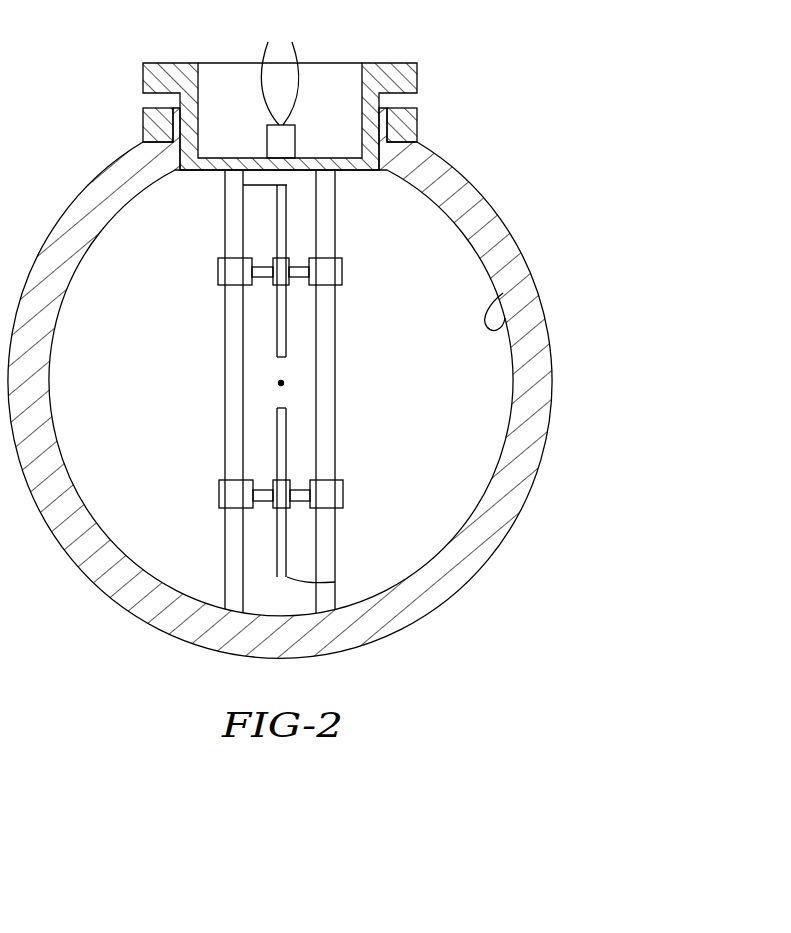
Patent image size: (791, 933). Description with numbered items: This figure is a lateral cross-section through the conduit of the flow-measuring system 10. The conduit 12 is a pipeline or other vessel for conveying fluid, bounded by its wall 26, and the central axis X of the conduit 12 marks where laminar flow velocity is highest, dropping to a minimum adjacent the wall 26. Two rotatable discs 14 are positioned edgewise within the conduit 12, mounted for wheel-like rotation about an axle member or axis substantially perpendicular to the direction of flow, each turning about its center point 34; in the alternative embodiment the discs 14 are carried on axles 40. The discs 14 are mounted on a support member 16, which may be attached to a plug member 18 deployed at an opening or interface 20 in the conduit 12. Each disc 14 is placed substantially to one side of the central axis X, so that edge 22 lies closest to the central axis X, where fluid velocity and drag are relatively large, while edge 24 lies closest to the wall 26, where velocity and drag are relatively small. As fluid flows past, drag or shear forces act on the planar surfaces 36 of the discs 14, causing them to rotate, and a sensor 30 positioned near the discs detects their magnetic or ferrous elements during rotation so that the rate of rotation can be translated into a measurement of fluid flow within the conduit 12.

The system 10 is at (314, 339).
The conduit 12 is at (540, 447).
The rotatable discs 14 is at (287, 215).
The support member 16 is at (333, 467).
The plug member 18 is at (403, 70).
The opening or interface 20 is at (405, 117).
The edge 22 is at (277, 357).
The edge 24 is at (243, 185).
The wall 26 is at (503, 293).
The sensor 30 is at (317, 138).
The center point 34 is at (289, 258).
The planar surfaces 36 is at (284, 389).
The axles 40 is at (265, 268).
The central axis X is at (281, 383).